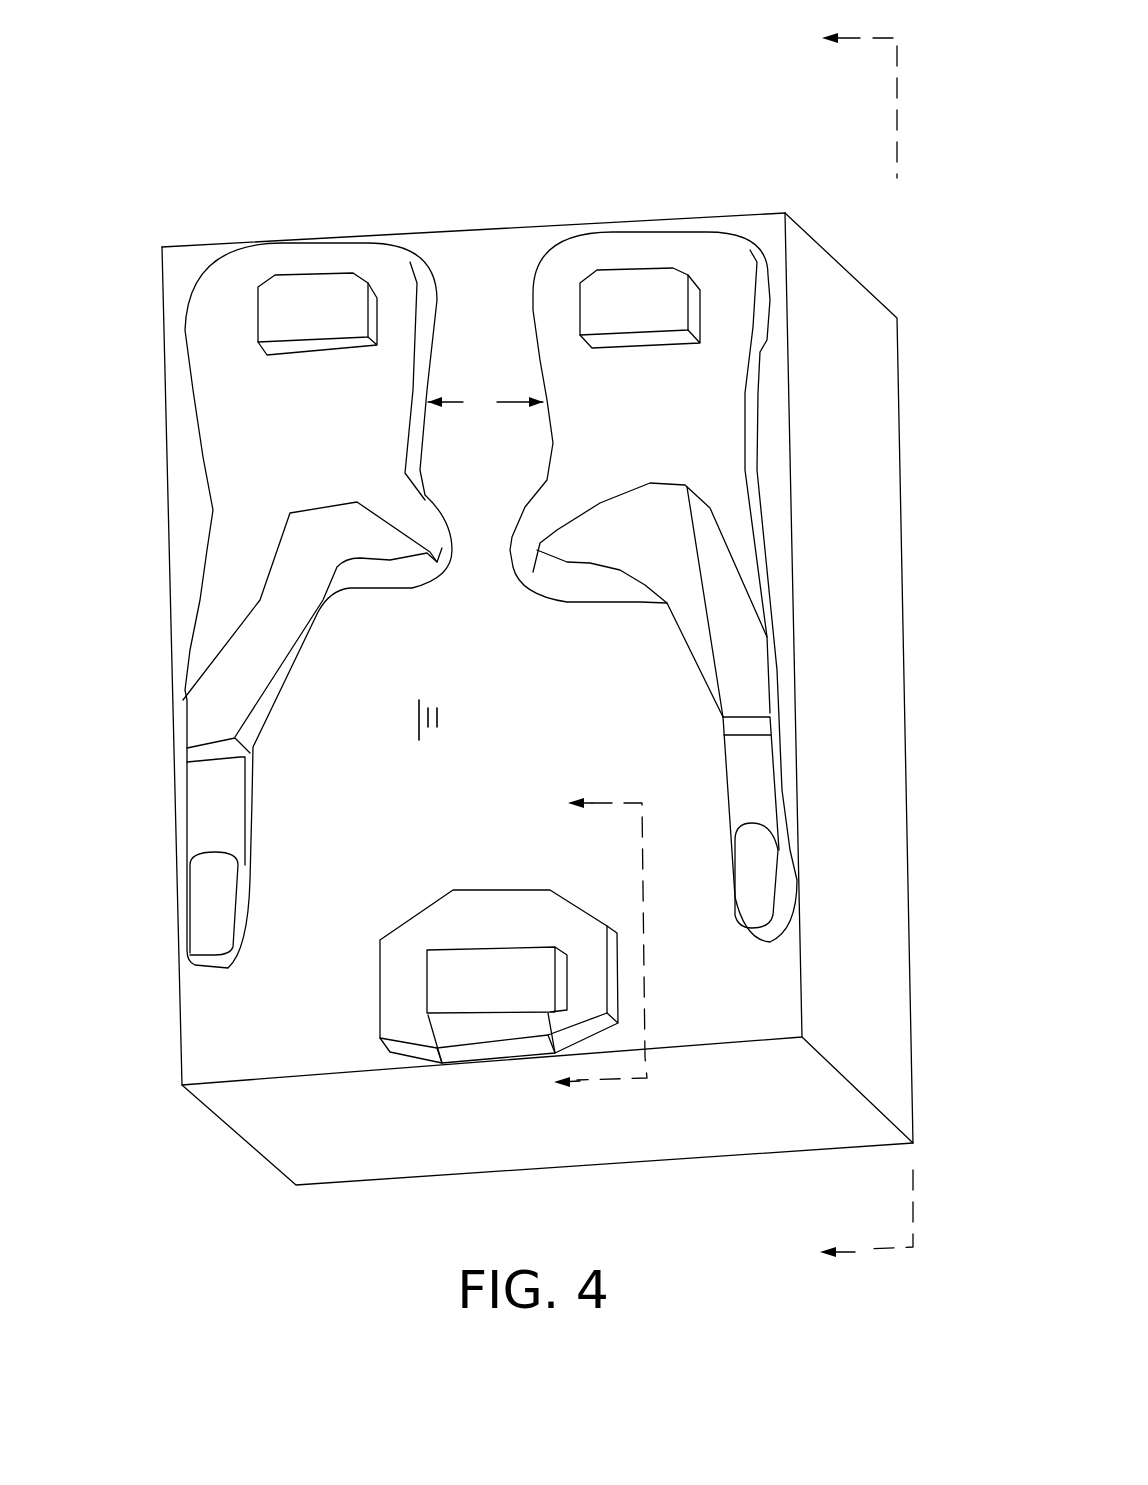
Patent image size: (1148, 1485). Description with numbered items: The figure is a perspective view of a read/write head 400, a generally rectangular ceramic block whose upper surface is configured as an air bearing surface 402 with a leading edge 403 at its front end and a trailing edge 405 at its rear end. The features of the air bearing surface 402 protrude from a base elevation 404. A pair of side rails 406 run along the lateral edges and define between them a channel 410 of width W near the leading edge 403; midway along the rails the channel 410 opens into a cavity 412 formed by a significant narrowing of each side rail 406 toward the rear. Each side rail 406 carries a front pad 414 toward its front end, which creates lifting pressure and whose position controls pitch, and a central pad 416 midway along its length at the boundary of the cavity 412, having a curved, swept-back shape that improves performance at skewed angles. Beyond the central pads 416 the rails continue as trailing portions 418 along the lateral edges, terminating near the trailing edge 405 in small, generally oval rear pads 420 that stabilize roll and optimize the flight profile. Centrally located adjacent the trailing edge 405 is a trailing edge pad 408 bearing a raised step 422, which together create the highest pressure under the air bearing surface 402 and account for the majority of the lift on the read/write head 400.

The read/write head 400 is at (830, 192).
The air bearing surface 402 is at (462, 248).
The leading edge 403 is at (540, 223).
The base elevation 404 is at (415, 723).
The trailing edge 405 is at (668, 1156).
The side rails 406 is at (222, 458).
The trailing edge pad 408 is at (392, 997).
The channel 410 is at (495, 497).
The cavity 412 is at (513, 692).
The front pads 414 is at (288, 298).
The central pads 416 is at (320, 518).
The trailing portions 418 is at (203, 807).
The rear pads 420 is at (205, 903).
The raised step 422 is at (500, 963).